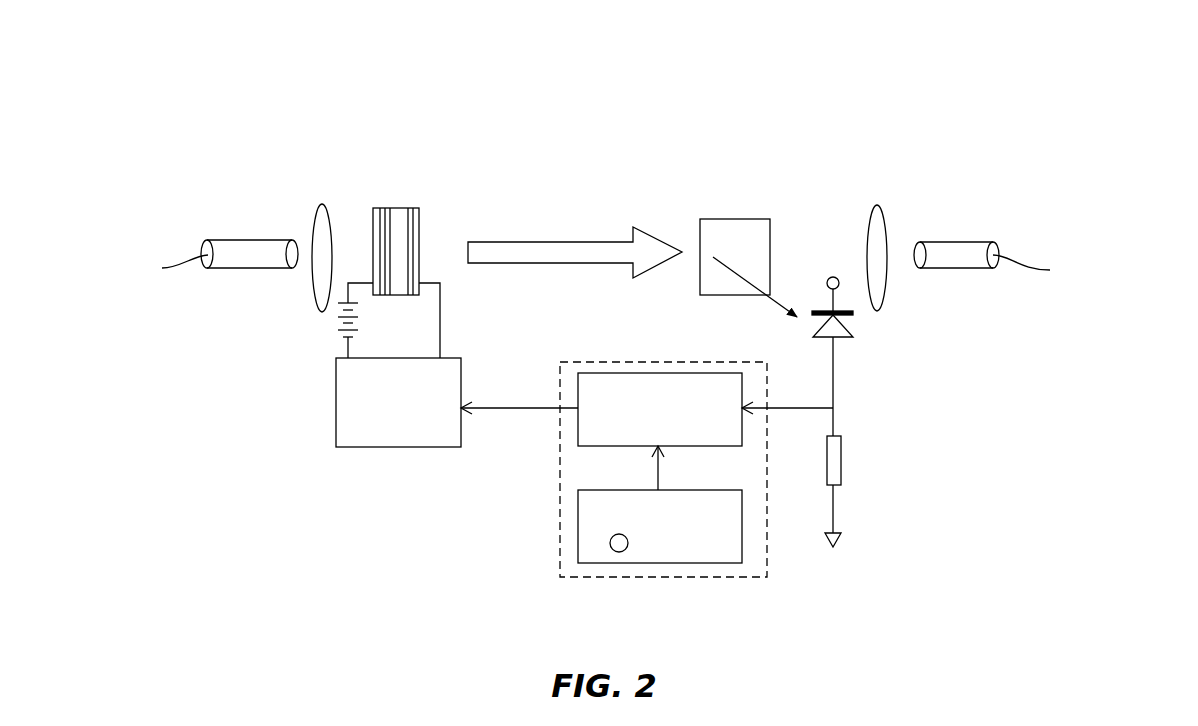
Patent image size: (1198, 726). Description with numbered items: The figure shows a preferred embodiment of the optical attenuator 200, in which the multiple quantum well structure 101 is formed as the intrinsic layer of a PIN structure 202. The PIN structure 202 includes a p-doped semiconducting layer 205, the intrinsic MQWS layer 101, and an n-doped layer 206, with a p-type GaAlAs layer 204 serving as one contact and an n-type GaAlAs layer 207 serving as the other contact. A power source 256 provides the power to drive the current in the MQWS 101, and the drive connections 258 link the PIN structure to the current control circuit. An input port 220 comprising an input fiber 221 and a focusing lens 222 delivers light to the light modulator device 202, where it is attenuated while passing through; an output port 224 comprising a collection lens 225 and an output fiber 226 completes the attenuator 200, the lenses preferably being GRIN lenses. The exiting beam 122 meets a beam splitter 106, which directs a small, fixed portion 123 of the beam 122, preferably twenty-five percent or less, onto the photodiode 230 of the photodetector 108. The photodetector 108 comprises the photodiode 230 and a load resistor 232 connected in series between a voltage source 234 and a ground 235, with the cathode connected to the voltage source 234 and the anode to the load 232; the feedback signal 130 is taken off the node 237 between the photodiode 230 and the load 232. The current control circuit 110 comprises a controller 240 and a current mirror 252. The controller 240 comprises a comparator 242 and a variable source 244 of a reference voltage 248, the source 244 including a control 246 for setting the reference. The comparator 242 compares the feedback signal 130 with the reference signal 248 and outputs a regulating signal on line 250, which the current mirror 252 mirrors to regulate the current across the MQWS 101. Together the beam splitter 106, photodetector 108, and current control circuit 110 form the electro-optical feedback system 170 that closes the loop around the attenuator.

The attenuator 200 is at (845, 120).
The PIN structure 202 is at (405, 130).
The multiple quantum well structure 101 is at (397, 208).
The p-type layer 204 is at (374, 228).
The p-doped semiconducting layer 205 is at (383, 208).
The n-doped layer 206 is at (410, 208).
The n-type layer 207 is at (420, 230).
The beam 122 is at (576, 242).
The beam splitter 106 is at (751, 219).
The portion 123 is at (770, 302).
The input port 220 is at (275, 190).
The input fiber 221 is at (248, 240).
The focusing lens 222 is at (312, 274).
The output port 224 is at (957, 170).
The collection lens 225 is at (885, 222).
The output fiber 226 is at (957, 242).
The current control circuit 110 is at (443, 522).
The laser drive wiring 258 is at (440, 313).
The power source 256 is at (338, 330).
The current mirror 252 is at (402, 448).
The line 250 is at (525, 408).
The controller 240 is at (560, 532).
The comparator 242 is at (619, 373).
The reference voltage 248 is at (660, 475).
The variable source of a reference voltage 244 is at (709, 565).
The control 246 is at (616, 553).
The photodetector 108 is at (948, 462).
The voltage source 234 is at (838, 277).
The photodiode 230 is at (855, 325).
The node 237 is at (833, 372).
The feedback signal 130 is at (785, 413).
The load resistor 232 is at (841, 450).
The ground 235 is at (843, 545).
The electro-optical feedback system 170 is at (870, 590).